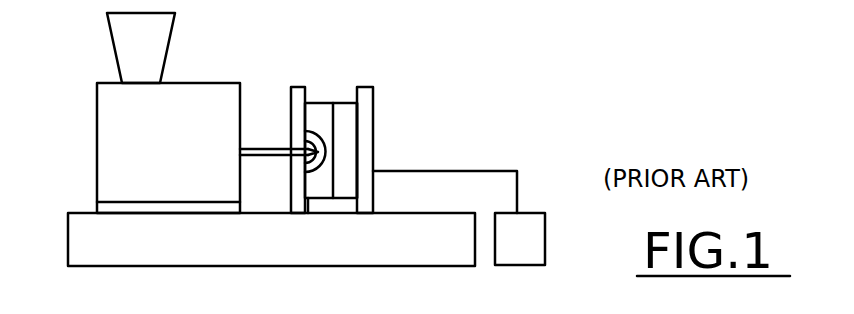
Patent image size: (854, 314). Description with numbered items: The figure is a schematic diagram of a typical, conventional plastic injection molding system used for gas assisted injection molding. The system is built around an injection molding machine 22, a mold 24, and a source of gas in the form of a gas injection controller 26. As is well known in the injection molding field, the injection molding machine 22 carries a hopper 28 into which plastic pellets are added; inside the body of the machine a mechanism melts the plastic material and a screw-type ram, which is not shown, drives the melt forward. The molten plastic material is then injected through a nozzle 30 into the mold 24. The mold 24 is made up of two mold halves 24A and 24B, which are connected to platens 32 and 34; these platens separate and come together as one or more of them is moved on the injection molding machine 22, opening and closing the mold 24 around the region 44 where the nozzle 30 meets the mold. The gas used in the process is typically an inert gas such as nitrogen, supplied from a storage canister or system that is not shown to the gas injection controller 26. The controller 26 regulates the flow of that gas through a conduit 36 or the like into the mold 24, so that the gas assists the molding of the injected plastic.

The injection molding machine 22 is at (109, 146).
The mold 24 is at (364, 115).
The mold half 24A is at (313, 101).
The mold half 24B is at (341, 101).
The gas injection controller 26 is at (545, 233).
The hopper 28 is at (163, 41).
The nozzle 30 is at (262, 143).
The platen 32 is at (295, 86).
The platen 34 is at (370, 87).
The conduit 36 is at (485, 170).
The sprue 44 is at (300, 162).